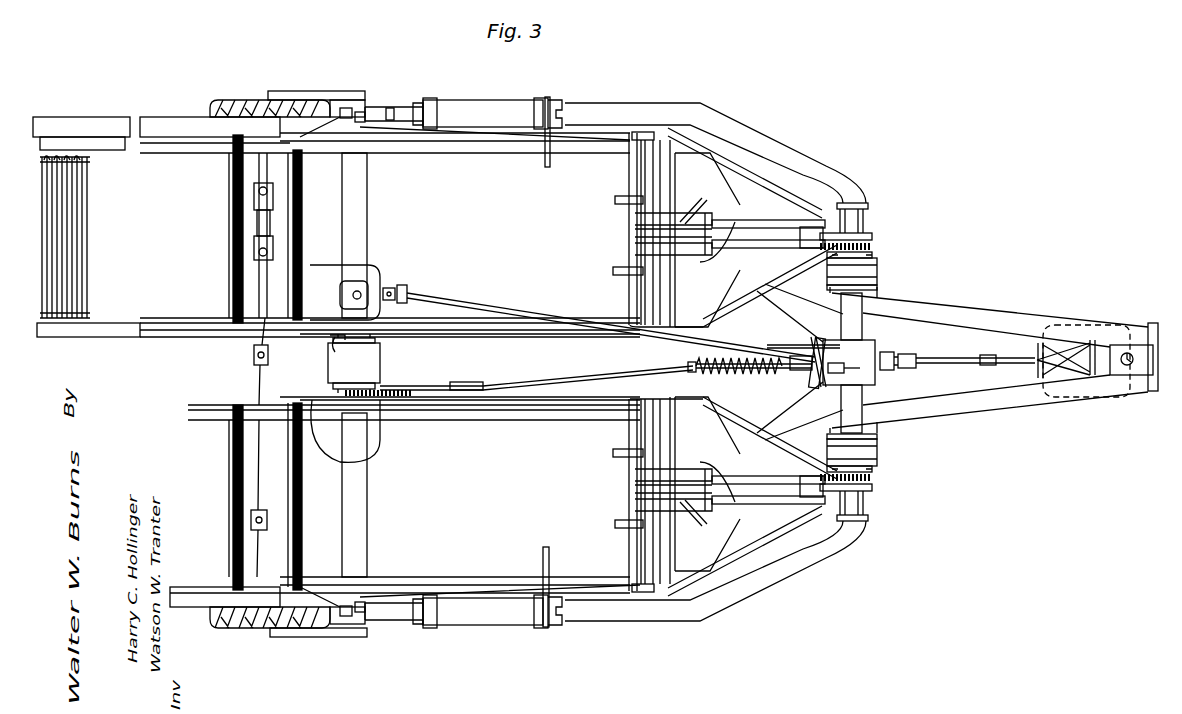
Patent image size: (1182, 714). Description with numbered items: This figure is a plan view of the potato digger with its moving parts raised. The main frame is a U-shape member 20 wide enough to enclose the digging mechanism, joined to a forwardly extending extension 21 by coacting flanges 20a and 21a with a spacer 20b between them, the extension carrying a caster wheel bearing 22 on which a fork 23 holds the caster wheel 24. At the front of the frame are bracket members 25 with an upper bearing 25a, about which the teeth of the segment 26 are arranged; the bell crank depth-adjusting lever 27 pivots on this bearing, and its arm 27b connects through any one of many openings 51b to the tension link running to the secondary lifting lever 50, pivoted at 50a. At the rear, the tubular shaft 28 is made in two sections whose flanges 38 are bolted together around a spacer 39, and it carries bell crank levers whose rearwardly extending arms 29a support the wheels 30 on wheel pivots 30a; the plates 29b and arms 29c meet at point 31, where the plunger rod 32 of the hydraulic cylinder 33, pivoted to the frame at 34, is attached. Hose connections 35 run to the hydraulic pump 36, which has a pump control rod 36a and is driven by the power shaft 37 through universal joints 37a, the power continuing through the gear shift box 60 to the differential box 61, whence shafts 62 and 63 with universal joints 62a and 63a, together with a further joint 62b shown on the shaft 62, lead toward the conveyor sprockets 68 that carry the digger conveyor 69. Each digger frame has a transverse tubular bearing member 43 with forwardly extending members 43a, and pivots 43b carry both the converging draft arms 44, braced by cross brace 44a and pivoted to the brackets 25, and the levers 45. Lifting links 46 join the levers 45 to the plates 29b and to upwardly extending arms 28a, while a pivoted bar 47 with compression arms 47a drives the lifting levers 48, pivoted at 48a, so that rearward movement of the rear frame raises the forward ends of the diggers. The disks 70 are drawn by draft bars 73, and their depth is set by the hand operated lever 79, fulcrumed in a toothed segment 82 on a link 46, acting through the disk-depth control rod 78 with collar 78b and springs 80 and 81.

The U-shape member 20 is at (820, 165).
The flange 20a is at (877, 265).
The spacer 20b is at (877, 275).
The forwardly extending extension 21 is at (1007, 317).
The flange 21a is at (873, 287).
The caster wheel bearing 22 is at (1133, 375).
The fork 23 is at (1113, 393).
The caster wheel 24 is at (1033, 367).
The bracket member 25 is at (868, 205).
The upper bearing 25a is at (866, 215).
The segment 26 is at (877, 250).
The bell crank depth-adjusting lever 27 is at (873, 238).
The arm 27b is at (870, 237).
The shaft 28 is at (357, 212).
The upwardly extending arm 28a is at (330, 337).
The rearwardly extending arm 29a is at (298, 100).
The plate 29b is at (325, 127).
The arm 29c is at (350, 110).
The wheel 30 is at (250, 118).
The wheel pivot 30a is at (277, 92).
The pivot point 31 is at (313, 120).
The plunger rod 32 is at (390, 613).
The hydraulic cylinder 33 is at (498, 115).
The cylinder pivot 34 is at (560, 103).
The hose connection 35 is at (543, 163).
The hydraulic pump 36 is at (867, 350).
The pump control rod 36a is at (818, 366).
The power shaft 37 is at (583, 330).
The universal joint 37a is at (405, 288).
The flange 38 is at (392, 115).
The spacer 39 is at (380, 363).
The tubular bearing member 43 is at (637, 167).
The forwardly extending member 43a is at (690, 208).
The pivot 43b is at (643, 132).
The forwardly converging arm 44 is at (745, 175).
The cross brace 44a is at (673, 187).
The lever 45 is at (655, 140).
The lifting link 46 is at (443, 132).
The pivoted bar 47 is at (643, 158).
The compression arm 47a is at (618, 202).
The lifting lever 48 is at (773, 187).
The pivot 48a is at (733, 222).
The secondary lifting lever 50 is at (757, 223).
The pivot 50a is at (643, 233).
The openings 51b is at (770, 228).
The gear shift box 60 is at (373, 277).
The differential box 61 is at (253, 295).
The shaft 62 is at (272, 225).
The universal joint 62a is at (257, 243).
The joint 62b is at (253, 210).
The transverse shaft 63 is at (252, 337).
The universal joint 63a is at (254, 352).
The conveyor sprocket 68 is at (73, 157).
The digger conveyor 69 is at (87, 237).
The disk 70 is at (803, 303).
The draft bar 73 is at (993, 357).
The disk-depth control rod 78 is at (607, 372).
The collar 78b is at (690, 370).
The hand operated lever 79 is at (453, 387).
The spring 80 is at (760, 373).
The spring 81 is at (705, 372).
The toothed segment 82 is at (408, 395).